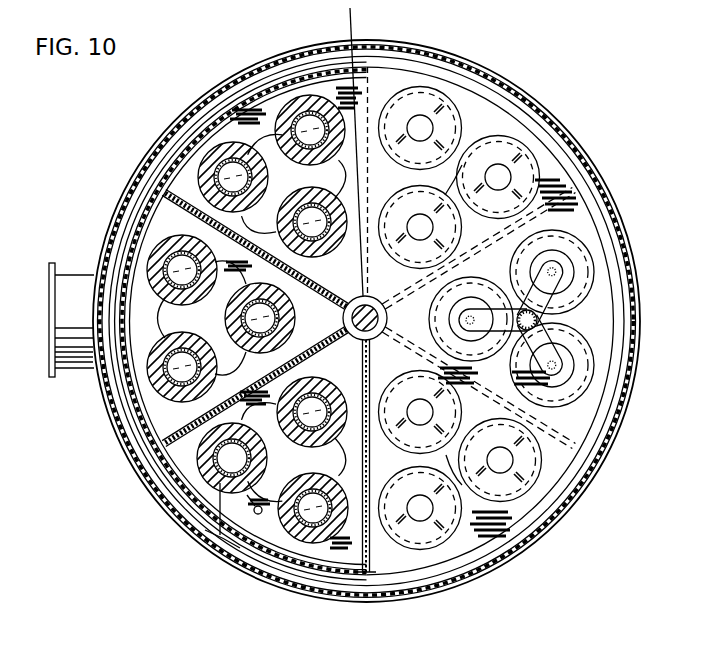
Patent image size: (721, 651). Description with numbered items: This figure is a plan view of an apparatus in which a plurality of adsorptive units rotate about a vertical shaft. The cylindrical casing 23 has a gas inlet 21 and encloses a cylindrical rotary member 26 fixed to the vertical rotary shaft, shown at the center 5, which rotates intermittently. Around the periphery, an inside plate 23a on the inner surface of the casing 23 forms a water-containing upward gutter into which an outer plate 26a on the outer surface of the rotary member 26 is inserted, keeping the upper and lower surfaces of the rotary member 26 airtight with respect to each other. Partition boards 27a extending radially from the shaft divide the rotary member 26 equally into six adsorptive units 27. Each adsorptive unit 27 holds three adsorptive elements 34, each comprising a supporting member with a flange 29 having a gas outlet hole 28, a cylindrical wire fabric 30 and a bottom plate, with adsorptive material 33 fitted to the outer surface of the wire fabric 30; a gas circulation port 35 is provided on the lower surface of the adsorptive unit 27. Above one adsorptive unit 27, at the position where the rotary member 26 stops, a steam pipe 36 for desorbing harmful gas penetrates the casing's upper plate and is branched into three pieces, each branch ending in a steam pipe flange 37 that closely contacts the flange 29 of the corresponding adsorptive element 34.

The central shaft 5 is at (352, 319).
The gas inlet 21 is at (78, 275).
The cylindrical casing 23 is at (240, 80).
The inside plate 23a is at (208, 113).
The cylindrical rotary member 26 is at (165, 152).
The outer plate 26a is at (138, 202).
The adsorptive unit 27 is at (277, 110).
The partition board 27a is at (345, 85).
The gas outlet hole 28 is at (416, 518).
The flange 29 is at (593, 395).
The cylindrical wire fabric 30 is at (222, 522).
The adsorptive material 33 is at (185, 497).
The adsorptive element 34 is at (193, 467).
The gas circulation port 35 is at (258, 514).
The steam pipe 36 is at (548, 300).
The steam pipe flange 37 is at (575, 370).